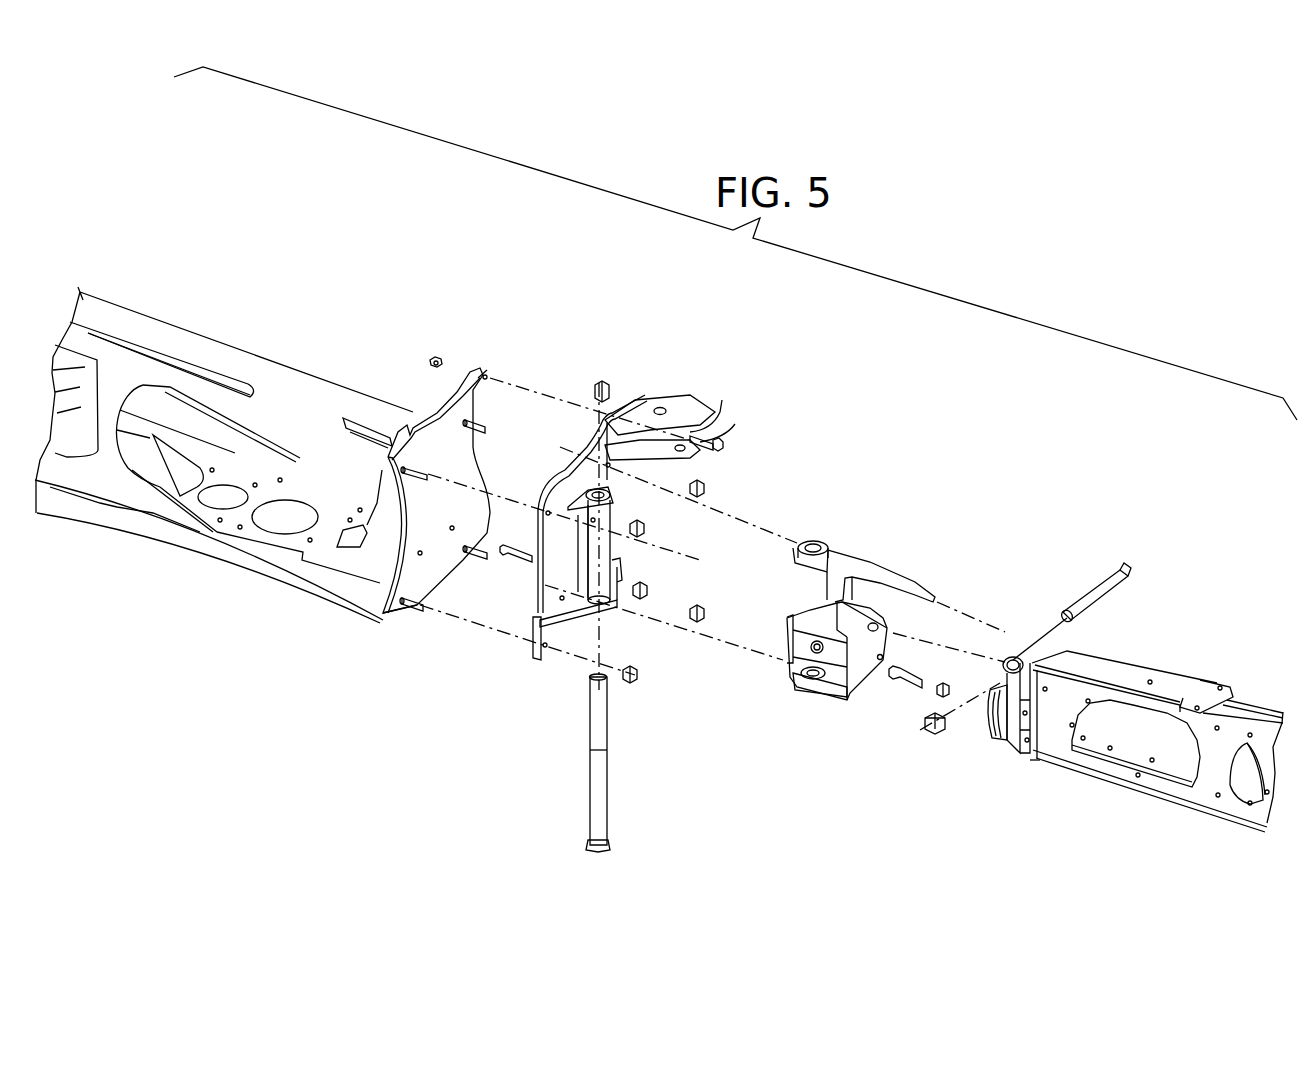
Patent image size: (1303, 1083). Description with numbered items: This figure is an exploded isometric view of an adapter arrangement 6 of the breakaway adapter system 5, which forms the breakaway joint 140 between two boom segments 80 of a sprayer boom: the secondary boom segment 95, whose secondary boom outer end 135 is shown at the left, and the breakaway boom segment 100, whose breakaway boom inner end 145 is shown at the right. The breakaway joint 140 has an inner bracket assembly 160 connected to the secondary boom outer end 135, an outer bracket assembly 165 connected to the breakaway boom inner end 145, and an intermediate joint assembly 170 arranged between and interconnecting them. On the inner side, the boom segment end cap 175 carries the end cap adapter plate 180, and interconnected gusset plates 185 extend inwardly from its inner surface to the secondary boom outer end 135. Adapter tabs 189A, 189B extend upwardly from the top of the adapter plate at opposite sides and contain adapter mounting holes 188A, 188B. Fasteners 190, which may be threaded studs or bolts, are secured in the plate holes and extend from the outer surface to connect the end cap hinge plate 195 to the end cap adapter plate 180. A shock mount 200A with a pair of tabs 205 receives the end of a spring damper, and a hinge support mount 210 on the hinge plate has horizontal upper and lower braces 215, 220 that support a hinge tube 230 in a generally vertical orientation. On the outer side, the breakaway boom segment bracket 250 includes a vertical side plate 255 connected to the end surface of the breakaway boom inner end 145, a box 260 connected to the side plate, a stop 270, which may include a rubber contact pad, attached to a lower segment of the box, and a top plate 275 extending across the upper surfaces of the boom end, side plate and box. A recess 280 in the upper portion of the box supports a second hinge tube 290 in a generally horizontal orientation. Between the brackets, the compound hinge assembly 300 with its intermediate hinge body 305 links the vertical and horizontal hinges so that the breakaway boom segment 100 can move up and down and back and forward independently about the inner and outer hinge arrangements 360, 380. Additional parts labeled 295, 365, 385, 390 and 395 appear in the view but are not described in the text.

The breakaway adapter system 5 is at (552, 252).
The adapter arrangement 6 is at (408, 275).
The boom segment 80 is at (158, 257).
The secondary boom segment 95 is at (253, 262).
The breakaway boom segment 100 is at (1275, 608).
The secondary boom outer end 135 is at (336, 348).
The breakaway joint 140 is at (712, 332).
The breakaway boom inner end 145 is at (1197, 604).
The inner bracket assembly 160 is at (476, 270).
The outer bracket assembly 165 is at (1120, 496).
The intermediate joint assembly 170 is at (890, 448).
The boom segment end cap 175 is at (368, 623).
The end cap adapter plate 180 is at (393, 616).
The gusset plates 185 is at (433, 405).
The adapter mounting hole 188A is at (390, 455).
The adapter mounting hole 188B is at (490, 378).
The adapter tab 189A is at (393, 462).
The adapter tab 189B is at (475, 362).
The fasteners 190 is at (415, 610).
The end cap hinge plate 195 is at (538, 668).
The shock mount 200A is at (647, 400).
The tabs 205 is at (685, 432).
The hinge support mount 210 is at (607, 628).
The upper brace 215 is at (588, 495).
The lower brace 220 is at (568, 612).
The hinge tube 230 is at (597, 580).
The breakaway boom segment bracket 250 is at (1031, 770).
The side plate 255 is at (1035, 755).
The box 260 is at (1010, 740).
The stop 270 is at (997, 722).
The top plate 275 is at (1128, 670).
The recess 280 is at (1005, 655).
The hinge tube 290 is at (1032, 652).
The pivot sleeve 295 is at (582, 555).
The compound hinge assembly 300 is at (880, 560).
The intermediate hinge body 305 is at (890, 553).
The inner hinge arrangement 360 is at (638, 787).
The pivot bolt 365 is at (590, 805).
The outer hinge arrangement 380 is at (1100, 535).
The bolt 385 is at (1097, 598).
The boss 390 is at (808, 598).
The link arm 395 is at (943, 553).